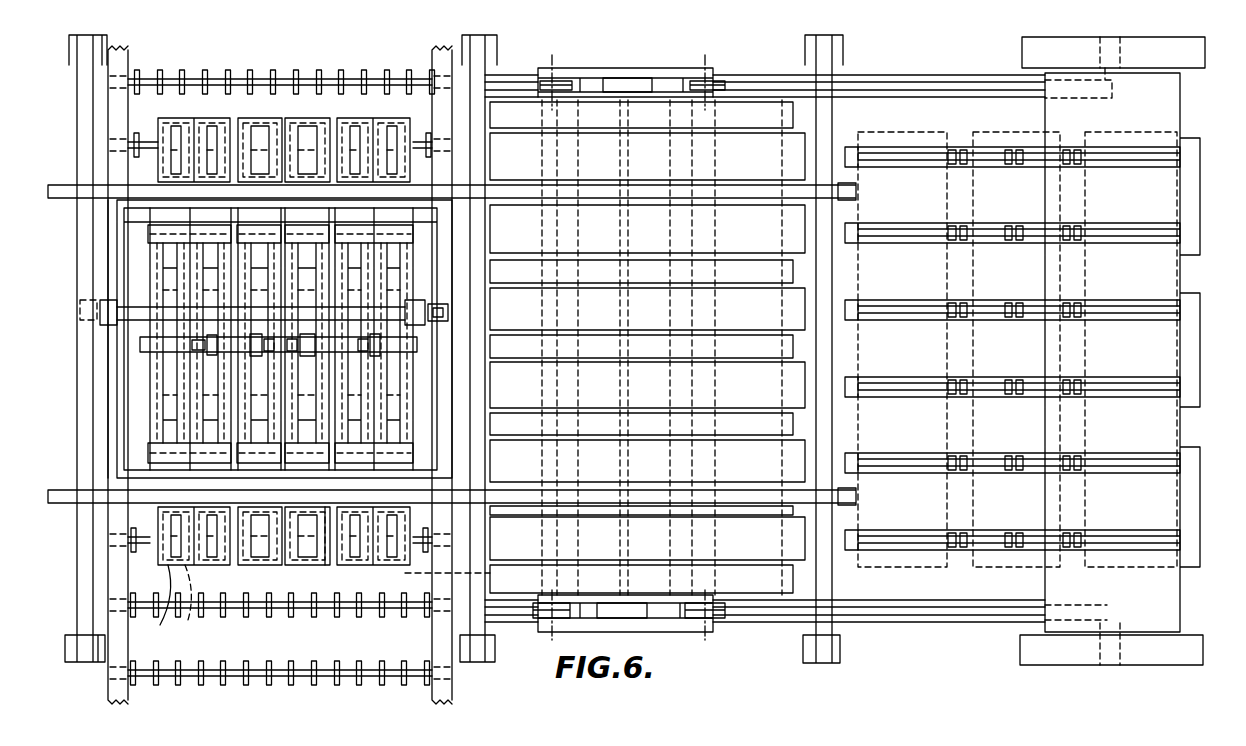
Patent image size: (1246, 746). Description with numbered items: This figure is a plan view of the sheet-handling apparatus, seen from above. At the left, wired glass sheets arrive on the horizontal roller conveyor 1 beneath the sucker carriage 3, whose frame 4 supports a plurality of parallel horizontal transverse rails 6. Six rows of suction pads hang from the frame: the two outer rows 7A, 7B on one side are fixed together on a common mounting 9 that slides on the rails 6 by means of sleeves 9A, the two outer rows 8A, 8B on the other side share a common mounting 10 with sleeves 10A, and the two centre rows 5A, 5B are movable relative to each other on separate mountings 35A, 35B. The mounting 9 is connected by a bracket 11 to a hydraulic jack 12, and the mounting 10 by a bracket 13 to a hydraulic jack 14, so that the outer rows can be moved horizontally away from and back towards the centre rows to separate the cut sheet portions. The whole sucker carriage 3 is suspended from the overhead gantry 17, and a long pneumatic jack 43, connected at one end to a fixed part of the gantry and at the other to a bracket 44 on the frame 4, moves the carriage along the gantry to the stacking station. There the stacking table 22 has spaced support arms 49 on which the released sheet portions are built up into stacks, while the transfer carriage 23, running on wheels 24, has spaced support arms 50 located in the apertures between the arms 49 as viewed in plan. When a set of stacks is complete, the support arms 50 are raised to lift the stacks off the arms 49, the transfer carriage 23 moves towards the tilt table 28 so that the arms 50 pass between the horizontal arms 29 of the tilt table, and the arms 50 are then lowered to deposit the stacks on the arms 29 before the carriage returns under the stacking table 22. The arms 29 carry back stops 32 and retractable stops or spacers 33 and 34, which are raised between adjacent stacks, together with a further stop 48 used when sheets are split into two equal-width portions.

The horizontal roller conveyor 1 is at (157, 673).
The sucker carriage 3 is at (101, 274).
The frame 4 is at (118, 202).
The centre row of suction pads 5A is at (303, 625).
The centre row of suction pads 5B is at (313, 568).
The transverse rails 6 is at (143, 140).
The row of suction pads 7A is at (186, 607).
The row of suction pads 7B is at (213, 566).
The row of suction pads 8A is at (355, 567).
The row of suction pads 8B is at (463, 582).
The mounting 9 is at (152, 363).
The sleeve 9A is at (153, 218).
The mounting 10 is at (410, 392).
The sleeve 10A is at (417, 220).
The bracket 11 is at (147, 333).
The hydraulic jack 12 is at (140, 322).
The bracket 13 is at (383, 313).
The hydraulic jack 14 is at (328, 345).
The overhead gantry 17 is at (83, 497).
The stacking table 22 is at (599, 67).
The transfer carriage 23 is at (675, 68).
The wheels 24 is at (538, 83).
The tilt table 28 is at (966, 635).
The arms 29 is at (905, 388).
The back stops 32 is at (1188, 537).
The retractable stop 33 is at (957, 537).
The retractable stop 34 is at (1072, 545).
The mounting 35A is at (280, 621).
The mounting 35B is at (246, 607).
The pneumatic jack 43 is at (452, 348).
The bracket 44 is at (445, 297).
The stop 48 is at (1012, 540).
The support arms 49 is at (797, 157).
The support arms 50 is at (797, 272).